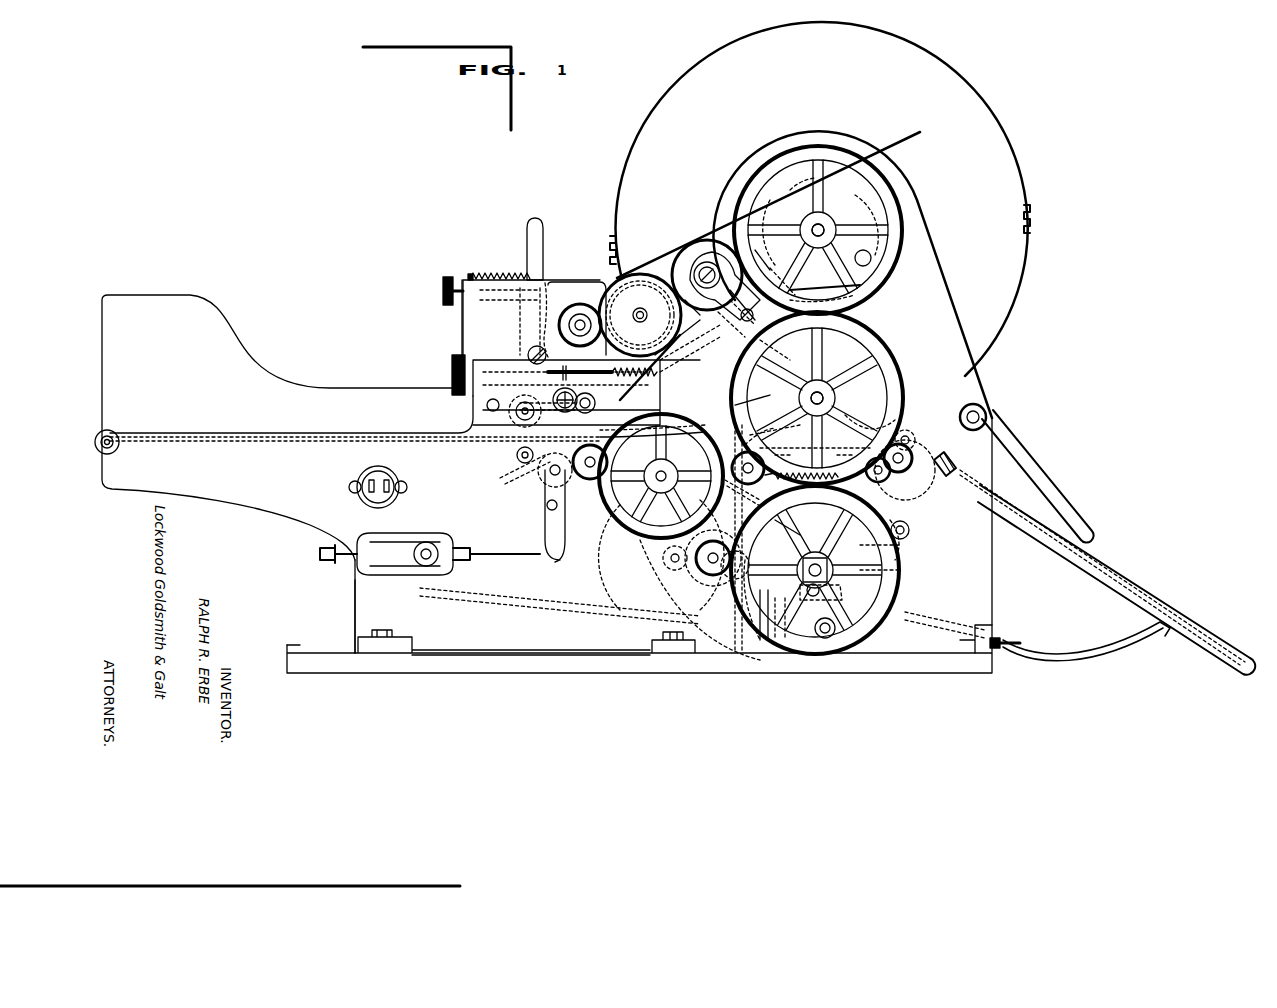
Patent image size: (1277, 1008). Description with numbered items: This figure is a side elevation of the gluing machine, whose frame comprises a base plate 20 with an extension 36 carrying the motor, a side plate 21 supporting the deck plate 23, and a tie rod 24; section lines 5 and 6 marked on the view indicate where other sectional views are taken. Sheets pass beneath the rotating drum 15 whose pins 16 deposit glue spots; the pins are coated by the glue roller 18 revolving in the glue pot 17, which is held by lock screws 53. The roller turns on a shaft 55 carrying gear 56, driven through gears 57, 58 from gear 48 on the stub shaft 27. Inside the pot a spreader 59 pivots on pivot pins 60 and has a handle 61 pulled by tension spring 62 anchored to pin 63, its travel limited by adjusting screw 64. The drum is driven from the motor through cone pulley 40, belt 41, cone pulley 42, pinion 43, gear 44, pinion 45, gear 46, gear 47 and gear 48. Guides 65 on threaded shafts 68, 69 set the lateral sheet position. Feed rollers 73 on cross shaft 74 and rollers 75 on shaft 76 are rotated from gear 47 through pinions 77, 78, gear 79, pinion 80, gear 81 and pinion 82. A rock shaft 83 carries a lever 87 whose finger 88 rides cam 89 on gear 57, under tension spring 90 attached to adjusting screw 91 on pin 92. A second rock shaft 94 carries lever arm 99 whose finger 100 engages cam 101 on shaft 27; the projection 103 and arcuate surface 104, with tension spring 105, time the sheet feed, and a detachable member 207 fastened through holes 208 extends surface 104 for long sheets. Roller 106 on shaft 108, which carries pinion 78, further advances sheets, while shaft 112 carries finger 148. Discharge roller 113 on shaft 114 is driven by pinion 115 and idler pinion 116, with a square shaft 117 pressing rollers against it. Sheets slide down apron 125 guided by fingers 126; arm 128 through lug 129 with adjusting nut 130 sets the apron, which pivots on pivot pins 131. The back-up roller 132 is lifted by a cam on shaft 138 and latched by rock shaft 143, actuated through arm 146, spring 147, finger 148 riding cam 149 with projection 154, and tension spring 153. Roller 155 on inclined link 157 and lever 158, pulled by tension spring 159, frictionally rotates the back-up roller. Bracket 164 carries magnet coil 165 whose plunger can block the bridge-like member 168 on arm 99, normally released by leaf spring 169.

The gear studs 5 is at (845, 470).
The shaft hub 6 is at (707, 272).
The drum 15 is at (950, 112).
The pins 16 is at (1028, 215).
The glue pot 17 is at (462, 318).
The glue roller 18 is at (548, 285).
The base plate 20 is at (437, 664).
The side plate 21 is at (352, 598).
The deck plate 23 is at (335, 445).
The tie rod 24 is at (545, 375).
The stub shaft 27 is at (833, 228).
The extension 36 is at (292, 650).
The cone pulley 40 is at (420, 580).
The belt 41 is at (460, 588).
The cone pulley 42 is at (620, 598).
The pinion 43 is at (664, 573).
The gear 44 is at (701, 571).
The pinion 45 is at (710, 580).
The gear 46 is at (865, 630).
The gear 47 is at (880, 366).
The gear 48 is at (905, 232).
The lock screw 53 is at (452, 365).
The shaft 55 is at (582, 315).
The gear 56 is at (583, 300).
The gear 57 is at (640, 272).
The gear 58 is at (700, 240).
The spreader 59 is at (525, 290).
The pivot pin 60 is at (533, 358).
The handle 61 is at (531, 220).
The tension spring 62 is at (488, 278).
The pin 63 is at (470, 278).
The adjusting screw 64 is at (445, 282).
The guide 65 is at (250, 370).
The threaded shaft 68 is at (488, 408).
The threaded shaft 69 is at (110, 430).
The roller 73 is at (508, 455).
The cross shaft 74 is at (515, 483).
The roller 75 is at (553, 542).
The shaft 76 is at (590, 480).
The pinion 77 is at (785, 469).
The pinion 78 is at (760, 430).
The gear 79 is at (620, 520).
The pinion 80 is at (575, 428).
The gear 81 is at (527, 477).
The pinion 82 is at (508, 440).
The rock shaft 83 is at (640, 410).
The lever 87 is at (672, 352).
The finger 88 is at (672, 338).
The cam 89 is at (658, 268).
The tension spring 90 is at (643, 316).
The adjusting screw 91 is at (590, 370).
The pin 92 is at (563, 385).
The rock shaft 94 is at (672, 395).
The lever arm 99 is at (832, 373).
The finger 100 is at (861, 277).
The cam 101 is at (880, 215).
The projection 103 is at (790, 195).
The arcuate outer surface 104 is at (840, 210).
The tension spring 105 is at (783, 267).
The roller 106 is at (738, 494).
The shaft 108 is at (775, 422).
The shaft 112 is at (753, 396).
The roller 113 is at (918, 432).
The shaft 114 is at (910, 450).
The pinion 115 is at (908, 470).
The idler pinion 116 is at (912, 482).
The square shaft 117 is at (975, 410).
The apron 125 is at (1110, 576).
The finger 126 is at (1040, 472).
The arm 128 is at (1087, 664).
The lug 129 is at (1000, 625).
The adjusting nut 130 is at (995, 650).
The pivot pin 131 is at (950, 465).
The back-up roller 132 is at (870, 410).
The shaft 138 is at (840, 588).
The rock shaft 143 is at (838, 630).
The arm 146 is at (818, 650).
The spring 147 is at (798, 625).
The finger 148 is at (760, 590).
The cam 149 is at (870, 590).
The tension spring 153 is at (775, 529).
The projection 154 is at (785, 610).
The roller 155 is at (915, 530).
The inclined link 157 is at (915, 548).
The lever 158 is at (915, 560).
The tension spring 159 is at (745, 590).
The bracket 164 is at (735, 290).
The magnet coil 165 is at (758, 250).
The bridge-like member 168 is at (785, 357).
The leaf spring 169 is at (690, 300).
The detachable member 207 is at (873, 244).
The holes 208 is at (875, 262).